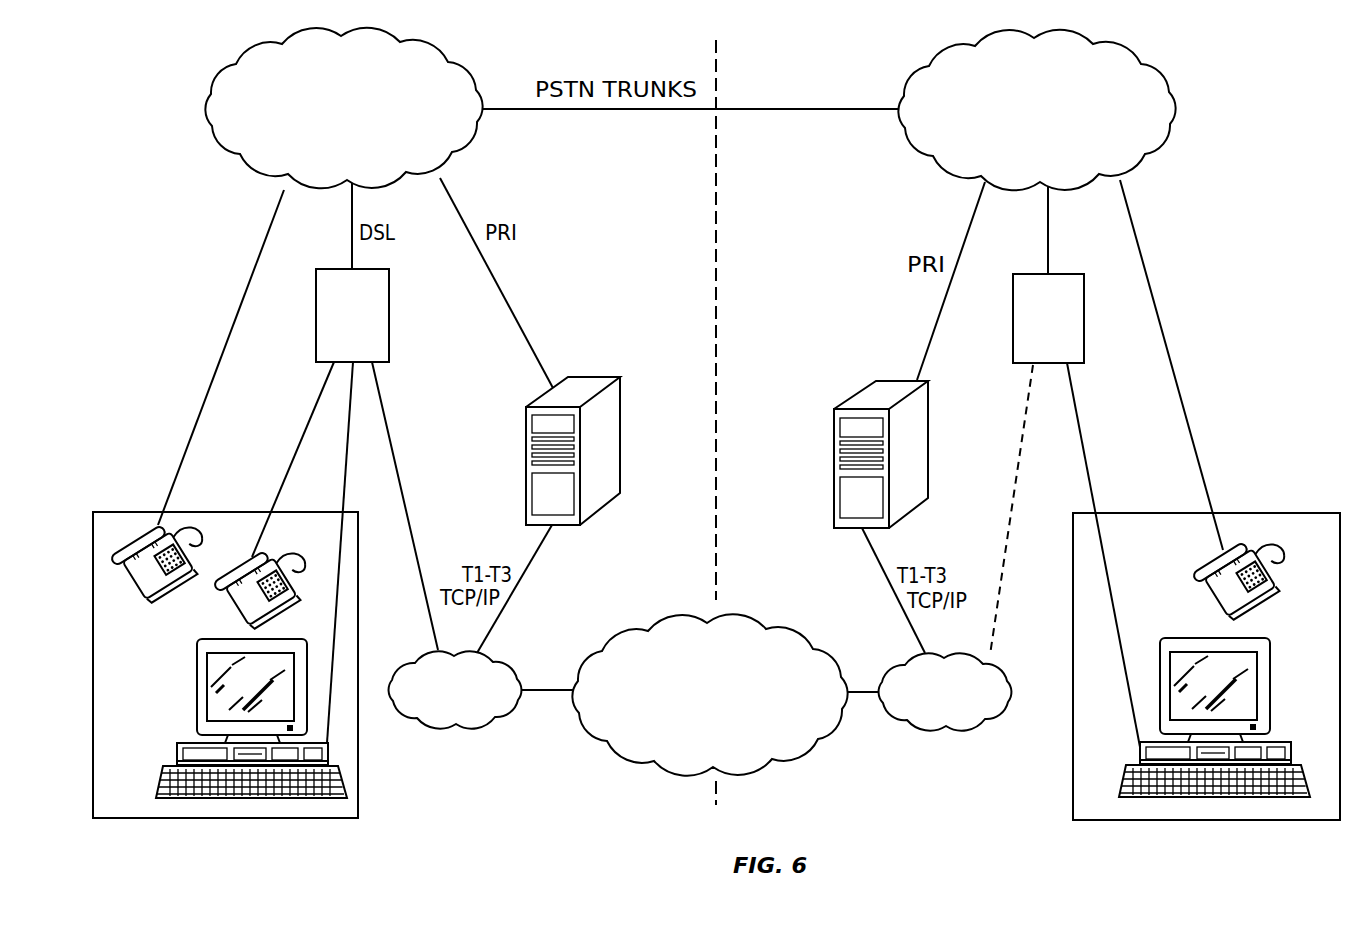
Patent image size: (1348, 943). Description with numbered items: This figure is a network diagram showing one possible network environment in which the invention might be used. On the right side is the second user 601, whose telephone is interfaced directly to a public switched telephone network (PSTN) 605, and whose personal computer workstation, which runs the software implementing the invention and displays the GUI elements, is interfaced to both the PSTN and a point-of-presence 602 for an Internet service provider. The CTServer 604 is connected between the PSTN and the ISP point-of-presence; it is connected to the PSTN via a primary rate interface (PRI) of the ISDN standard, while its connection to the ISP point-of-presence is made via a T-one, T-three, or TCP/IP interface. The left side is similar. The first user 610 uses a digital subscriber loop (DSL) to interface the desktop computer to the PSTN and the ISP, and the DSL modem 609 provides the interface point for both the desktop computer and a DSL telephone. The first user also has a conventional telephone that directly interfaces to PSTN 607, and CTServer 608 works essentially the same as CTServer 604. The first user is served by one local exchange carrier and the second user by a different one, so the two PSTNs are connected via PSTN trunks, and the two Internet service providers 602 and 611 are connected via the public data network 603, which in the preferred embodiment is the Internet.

The User 2 601 is at (1268, 513).
The point-of-presence for an Internet service provider 602 is at (965, 715).
The public data network 603 is at (693, 741).
The CTServer 604 is at (903, 380).
The public switched telephone network 605 is at (1020, 160).
The PSTN 607 is at (330, 158).
The CTServer 608 is at (587, 375).
The DSL modem 609 is at (332, 325).
The User 1 610 is at (143, 512).
The Internet service provider 611 is at (473, 713).